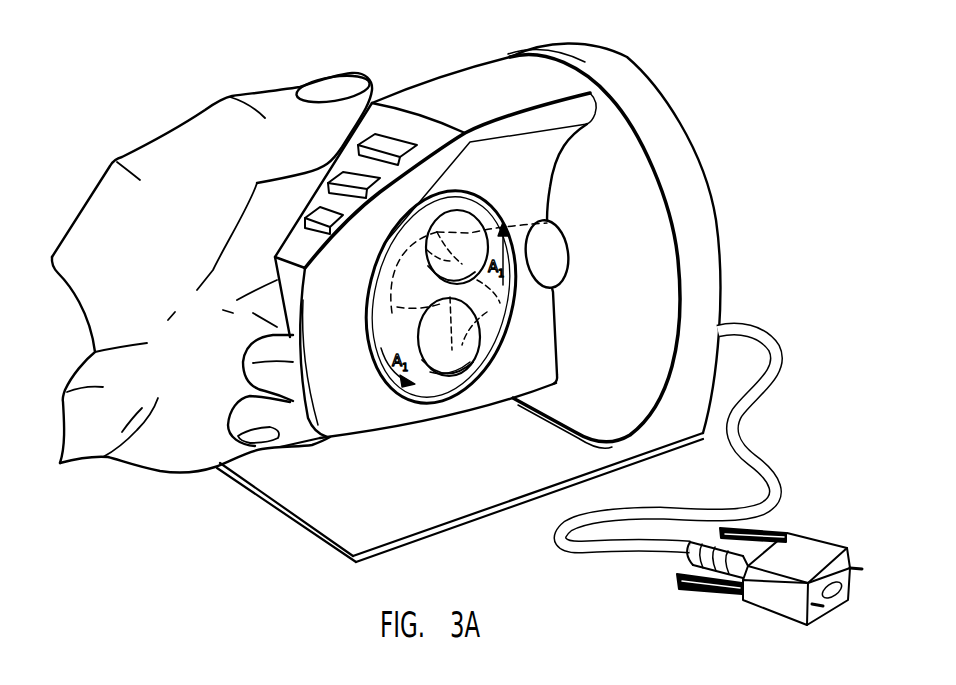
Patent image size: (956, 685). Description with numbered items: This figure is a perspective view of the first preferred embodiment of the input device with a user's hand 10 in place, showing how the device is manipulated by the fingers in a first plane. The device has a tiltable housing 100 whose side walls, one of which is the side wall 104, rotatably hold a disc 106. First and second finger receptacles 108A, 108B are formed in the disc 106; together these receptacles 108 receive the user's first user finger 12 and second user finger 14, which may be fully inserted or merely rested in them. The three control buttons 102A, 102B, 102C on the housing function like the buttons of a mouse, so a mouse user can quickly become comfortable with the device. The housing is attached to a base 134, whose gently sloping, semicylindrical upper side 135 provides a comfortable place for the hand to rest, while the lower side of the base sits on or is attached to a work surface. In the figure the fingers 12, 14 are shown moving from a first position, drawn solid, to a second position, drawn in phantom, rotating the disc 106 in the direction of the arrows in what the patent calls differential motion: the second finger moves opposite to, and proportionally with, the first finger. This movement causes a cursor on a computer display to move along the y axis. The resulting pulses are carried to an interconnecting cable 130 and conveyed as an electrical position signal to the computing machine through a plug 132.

The user's hand 10 is at (140, 495).
The tiltable housing 100 is at (454, 40).
The control button 102A is at (417, 146).
The control button 102B is at (381, 179).
The control button 102C is at (333, 235).
The side wall 104 is at (335, 414).
The disc 106 is at (400, 335).
The first user finger 12 is at (437, 232).
The second user finger 14 is at (445, 356).
The finger receptacles 108 is at (453, 350).
The first finger receptacle 108A is at (472, 229).
The second finger receptacle 108B is at (470, 355).
The interconnecting cable 130 is at (740, 424).
The plug 132 is at (767, 602).
The base 134 is at (579, 460).
The upper side of the base 135 is at (428, 473).